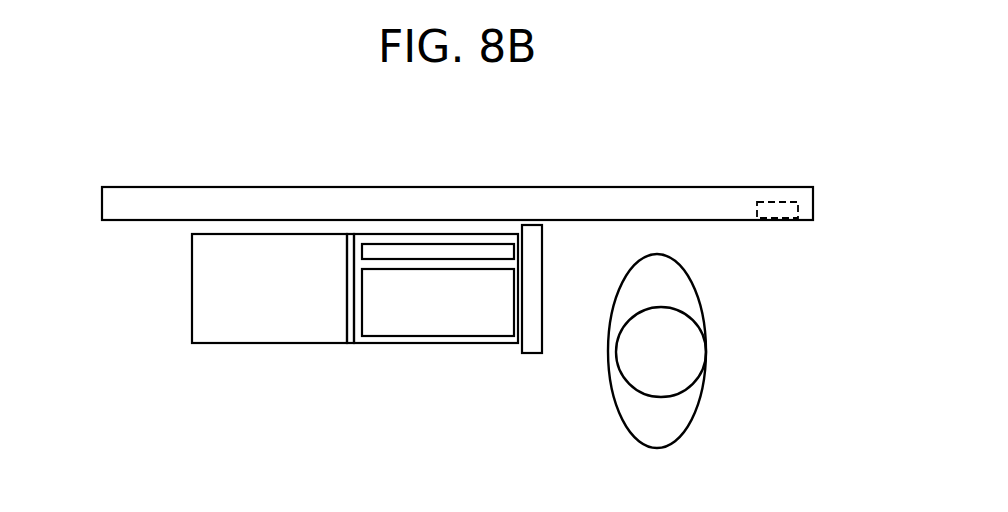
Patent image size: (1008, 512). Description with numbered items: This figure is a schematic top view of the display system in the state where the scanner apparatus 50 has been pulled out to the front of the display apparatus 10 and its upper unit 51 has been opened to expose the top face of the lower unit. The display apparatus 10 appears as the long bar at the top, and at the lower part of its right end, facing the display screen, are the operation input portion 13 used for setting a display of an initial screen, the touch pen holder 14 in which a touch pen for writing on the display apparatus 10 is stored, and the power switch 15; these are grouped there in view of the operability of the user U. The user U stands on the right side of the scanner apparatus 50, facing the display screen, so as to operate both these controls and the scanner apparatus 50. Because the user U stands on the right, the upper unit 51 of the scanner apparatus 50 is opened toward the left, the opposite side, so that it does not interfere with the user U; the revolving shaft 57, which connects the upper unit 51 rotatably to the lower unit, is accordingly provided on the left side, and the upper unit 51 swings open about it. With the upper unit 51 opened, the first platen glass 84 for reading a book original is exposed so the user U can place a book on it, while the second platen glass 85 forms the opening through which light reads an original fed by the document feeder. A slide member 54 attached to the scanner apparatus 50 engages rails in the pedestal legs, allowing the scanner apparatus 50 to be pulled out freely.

The display apparatus 10 is at (459, 197).
The operation input portion 13 is at (818, 244).
The touch pen holder 14 is at (818, 244).
The power switch 15 is at (778, 219).
The scanner apparatus 50 is at (321, 278).
The upper unit 51 is at (263, 330).
The revolving shaft 57 is at (355, 337).
The first platen glass 84 is at (436, 271).
The second platen glass 85 is at (407, 252).
The slide member 54 is at (532, 337).
The user U is at (707, 378).